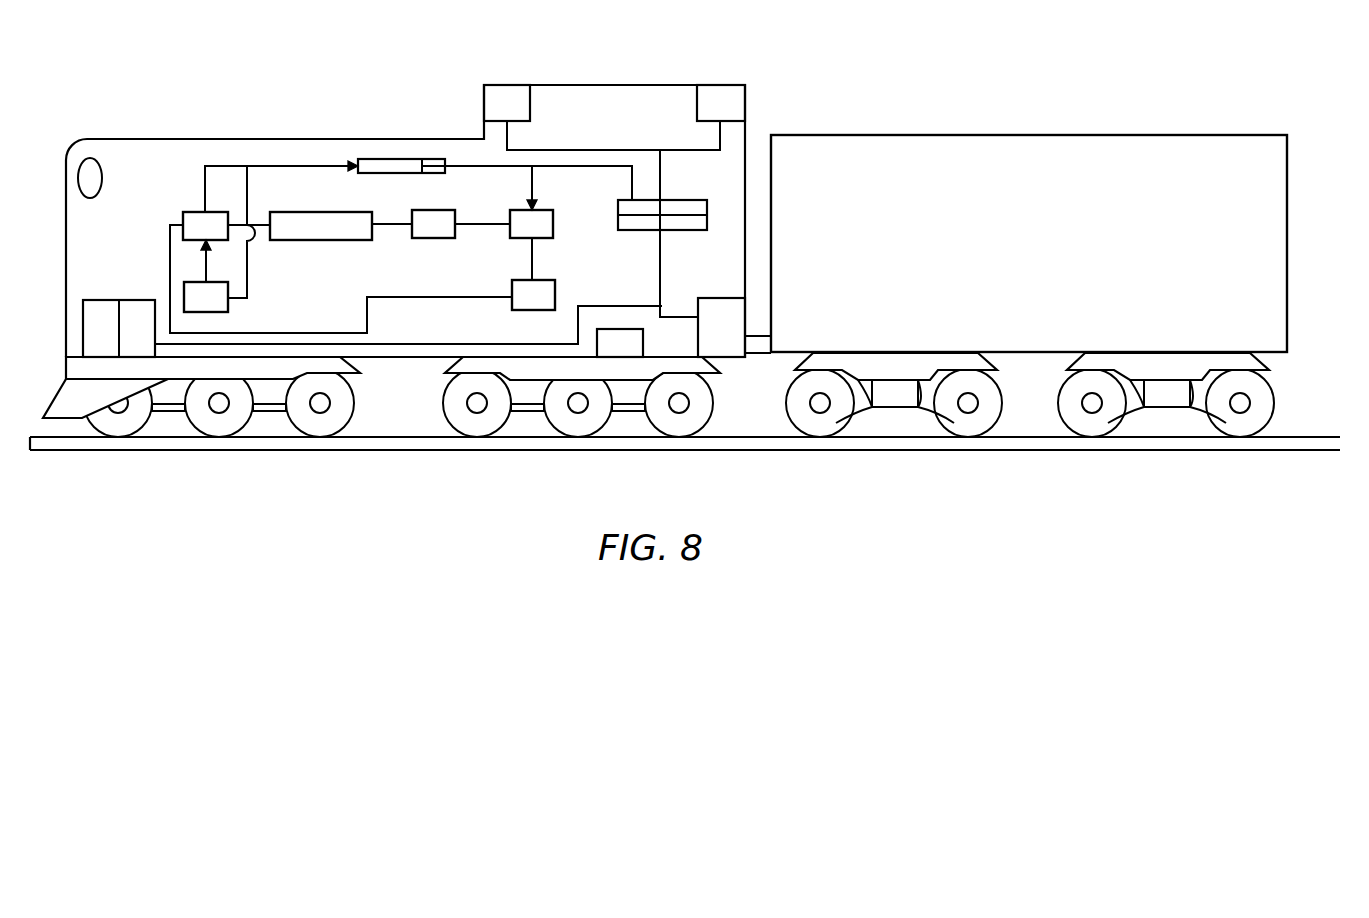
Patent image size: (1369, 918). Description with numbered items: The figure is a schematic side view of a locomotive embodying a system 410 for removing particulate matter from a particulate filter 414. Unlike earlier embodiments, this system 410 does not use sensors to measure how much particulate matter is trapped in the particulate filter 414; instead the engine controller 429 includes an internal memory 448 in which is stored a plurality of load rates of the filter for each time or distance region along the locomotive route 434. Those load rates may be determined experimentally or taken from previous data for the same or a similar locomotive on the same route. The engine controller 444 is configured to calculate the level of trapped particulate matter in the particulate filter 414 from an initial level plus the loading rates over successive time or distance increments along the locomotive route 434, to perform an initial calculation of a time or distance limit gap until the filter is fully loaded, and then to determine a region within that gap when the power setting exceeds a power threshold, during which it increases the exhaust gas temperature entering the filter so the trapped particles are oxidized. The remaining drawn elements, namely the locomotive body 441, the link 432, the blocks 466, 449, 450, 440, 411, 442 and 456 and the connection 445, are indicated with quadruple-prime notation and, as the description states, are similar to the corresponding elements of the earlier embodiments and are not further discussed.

The system 410 is at (801, 41).
The locomotive 441 is at (165, 139).
The communication link 432 is at (287, 165).
The engine controller 429 is at (386, 158).
The internal memory 448 is at (430, 158).
The particulate filter 414 is at (191, 212).
The memory 466 is at (334, 212).
The data bus 449 is at (493, 168).
The processor 450 is at (416, 238).
The input device 440 is at (493, 225).
The connection line 411 is at (553, 238).
The engine controller 444 is at (707, 200).
The wire 445 is at (248, 282).
The brake controller 442 is at (228, 305).
The throttle controller 456 is at (512, 300).
The locomotive route 434 is at (187, 452).